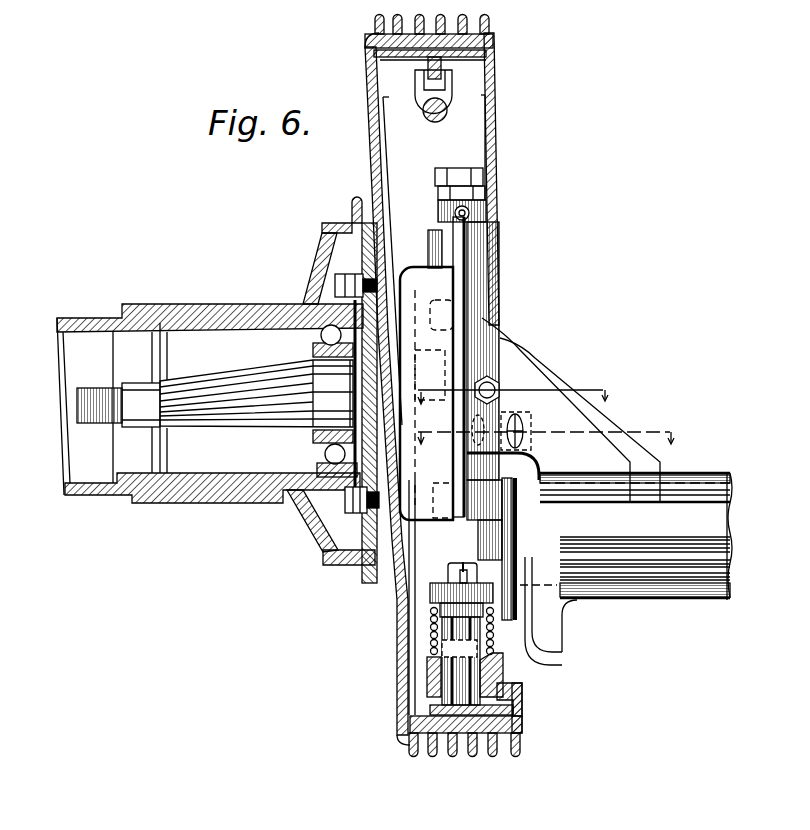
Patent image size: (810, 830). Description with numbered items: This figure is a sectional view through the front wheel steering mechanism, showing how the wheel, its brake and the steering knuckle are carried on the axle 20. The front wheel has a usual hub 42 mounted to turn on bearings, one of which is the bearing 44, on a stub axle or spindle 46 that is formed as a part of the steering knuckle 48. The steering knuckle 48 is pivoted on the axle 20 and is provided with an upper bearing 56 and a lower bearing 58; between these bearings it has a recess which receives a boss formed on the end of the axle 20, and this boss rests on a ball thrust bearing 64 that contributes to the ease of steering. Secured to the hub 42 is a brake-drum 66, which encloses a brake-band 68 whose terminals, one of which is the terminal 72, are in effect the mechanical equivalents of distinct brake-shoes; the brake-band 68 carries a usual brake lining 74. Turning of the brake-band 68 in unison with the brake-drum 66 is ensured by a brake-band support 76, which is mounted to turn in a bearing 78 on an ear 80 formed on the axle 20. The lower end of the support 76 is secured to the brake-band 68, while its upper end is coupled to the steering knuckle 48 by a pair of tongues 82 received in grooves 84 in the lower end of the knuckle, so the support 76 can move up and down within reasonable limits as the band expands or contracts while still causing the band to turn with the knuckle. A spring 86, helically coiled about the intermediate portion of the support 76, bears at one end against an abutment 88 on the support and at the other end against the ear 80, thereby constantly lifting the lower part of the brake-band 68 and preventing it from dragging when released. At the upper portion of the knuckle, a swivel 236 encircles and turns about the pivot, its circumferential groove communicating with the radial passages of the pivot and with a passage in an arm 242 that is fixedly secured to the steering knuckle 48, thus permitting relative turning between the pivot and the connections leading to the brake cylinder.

The axle 20 is at (695, 597).
The hub 42 is at (293, 290).
The bearing 44 is at (305, 331).
The stub axle or spindle 46 is at (259, 431).
The steering knuckle 48 is at (412, 268).
The upper bearing 56 is at (494, 263).
The lower bearing 58 is at (500, 549).
The ball thrust bearing 64 is at (513, 498).
The brake-drum 66 is at (370, 40).
The brake-band 68 is at (524, 708).
The terminal 72 is at (493, 60).
The brake lining 74 is at (493, 47).
The brake-band support 76 is at (455, 668).
The bearing 78 is at (433, 685).
The ear 80 is at (545, 660).
The tongues 82 is at (460, 578).
The grooves 84 is at (464, 568).
The spring 86 is at (428, 632).
The abutment 88 is at (432, 595).
The swivel 236 is at (493, 222).
The arm 242 is at (468, 212).